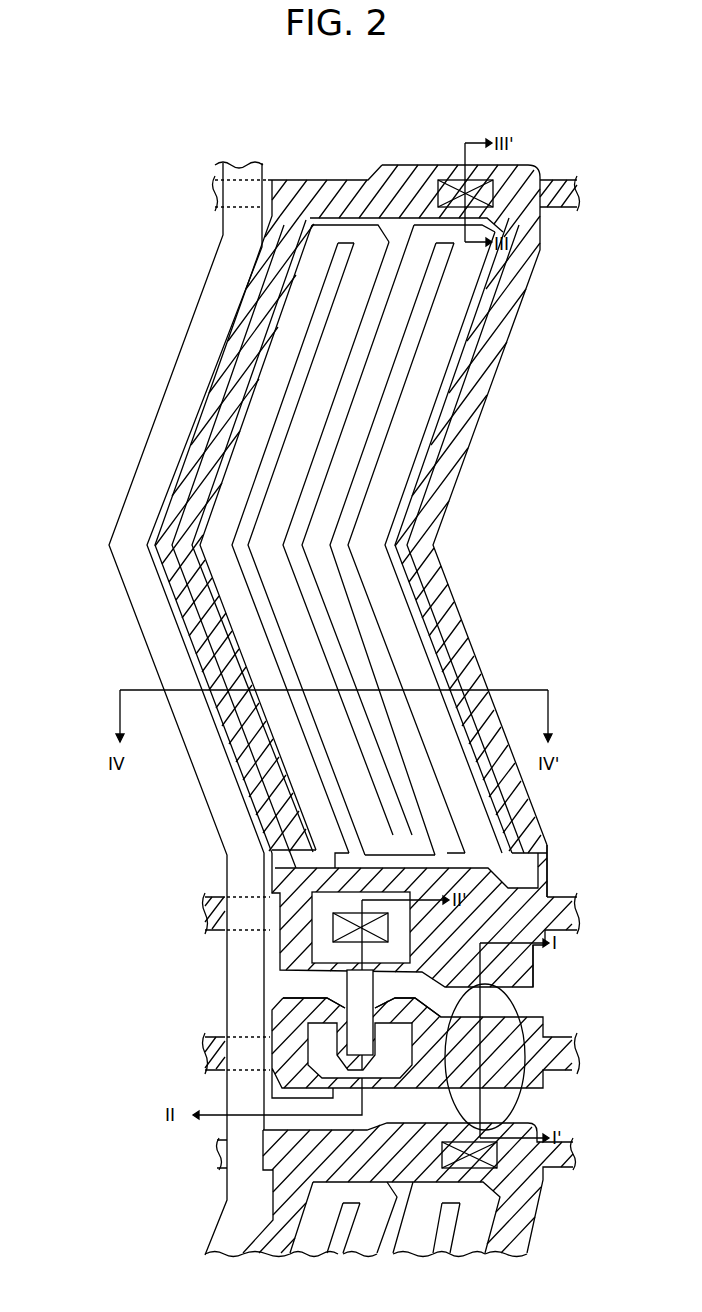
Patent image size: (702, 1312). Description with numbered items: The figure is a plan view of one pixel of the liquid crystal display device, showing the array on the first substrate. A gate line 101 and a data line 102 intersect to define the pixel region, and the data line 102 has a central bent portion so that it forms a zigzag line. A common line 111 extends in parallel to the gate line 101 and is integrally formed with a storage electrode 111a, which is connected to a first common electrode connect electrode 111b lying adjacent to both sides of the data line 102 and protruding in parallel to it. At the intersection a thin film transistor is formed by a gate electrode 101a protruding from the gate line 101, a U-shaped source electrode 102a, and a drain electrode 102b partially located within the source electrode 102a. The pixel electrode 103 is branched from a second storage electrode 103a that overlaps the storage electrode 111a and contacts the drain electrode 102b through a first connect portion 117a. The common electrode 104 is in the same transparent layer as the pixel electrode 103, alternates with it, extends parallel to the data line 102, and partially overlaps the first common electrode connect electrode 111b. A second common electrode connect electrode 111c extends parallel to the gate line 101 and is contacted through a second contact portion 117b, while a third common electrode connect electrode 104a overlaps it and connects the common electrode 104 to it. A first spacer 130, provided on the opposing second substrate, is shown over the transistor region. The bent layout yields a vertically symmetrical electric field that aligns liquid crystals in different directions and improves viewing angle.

The gate line 101 is at (513, 1100).
The gate electrode 101a is at (403, 993).
The data line 102 is at (213, 822).
The source electrode 102a is at (405, 1082).
The drain electrode 102b is at (312, 905).
The pixel electrode 103 is at (417, 357).
The second storage electrode 103a is at (535, 947).
The common electrode 104 is at (420, 613).
The third common electrode connect electrode 104a is at (522, 160).
The common line 111 is at (208, 932).
The storage electrode 111a is at (548, 977).
The first common electrode connect electrode 111b is at (532, 805).
The second common electrode connect electrode 111c is at (422, 163).
The first connect portion 117a is at (330, 932).
The second contact portion 117b is at (535, 170).
The first spacer 130 is at (517, 1007).